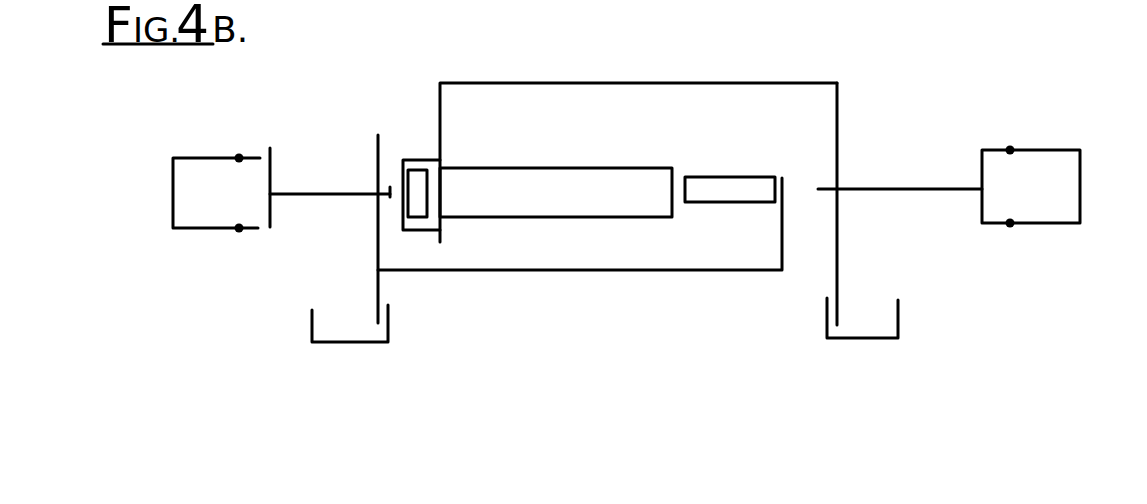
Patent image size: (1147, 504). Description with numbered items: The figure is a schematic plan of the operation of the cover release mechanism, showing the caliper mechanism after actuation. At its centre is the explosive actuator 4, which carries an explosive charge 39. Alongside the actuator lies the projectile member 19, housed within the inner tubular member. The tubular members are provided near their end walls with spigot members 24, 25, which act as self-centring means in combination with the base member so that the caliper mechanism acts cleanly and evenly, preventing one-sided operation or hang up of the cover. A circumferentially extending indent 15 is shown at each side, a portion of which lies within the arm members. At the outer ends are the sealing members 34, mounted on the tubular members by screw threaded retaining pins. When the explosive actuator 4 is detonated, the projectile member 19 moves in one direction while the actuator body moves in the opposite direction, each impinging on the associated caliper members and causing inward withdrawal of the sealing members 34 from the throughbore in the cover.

The actuator 4 is at (583, 180).
The circumferentially extending indent 15 is at (312, 330).
The projectile member 19 is at (733, 185).
The spigot member 24 is at (345, 229).
The spigot member 25 is at (834, 273).
The sealing member 34 is at (1032, 168).
The explosive charge 39 is at (430, 157).